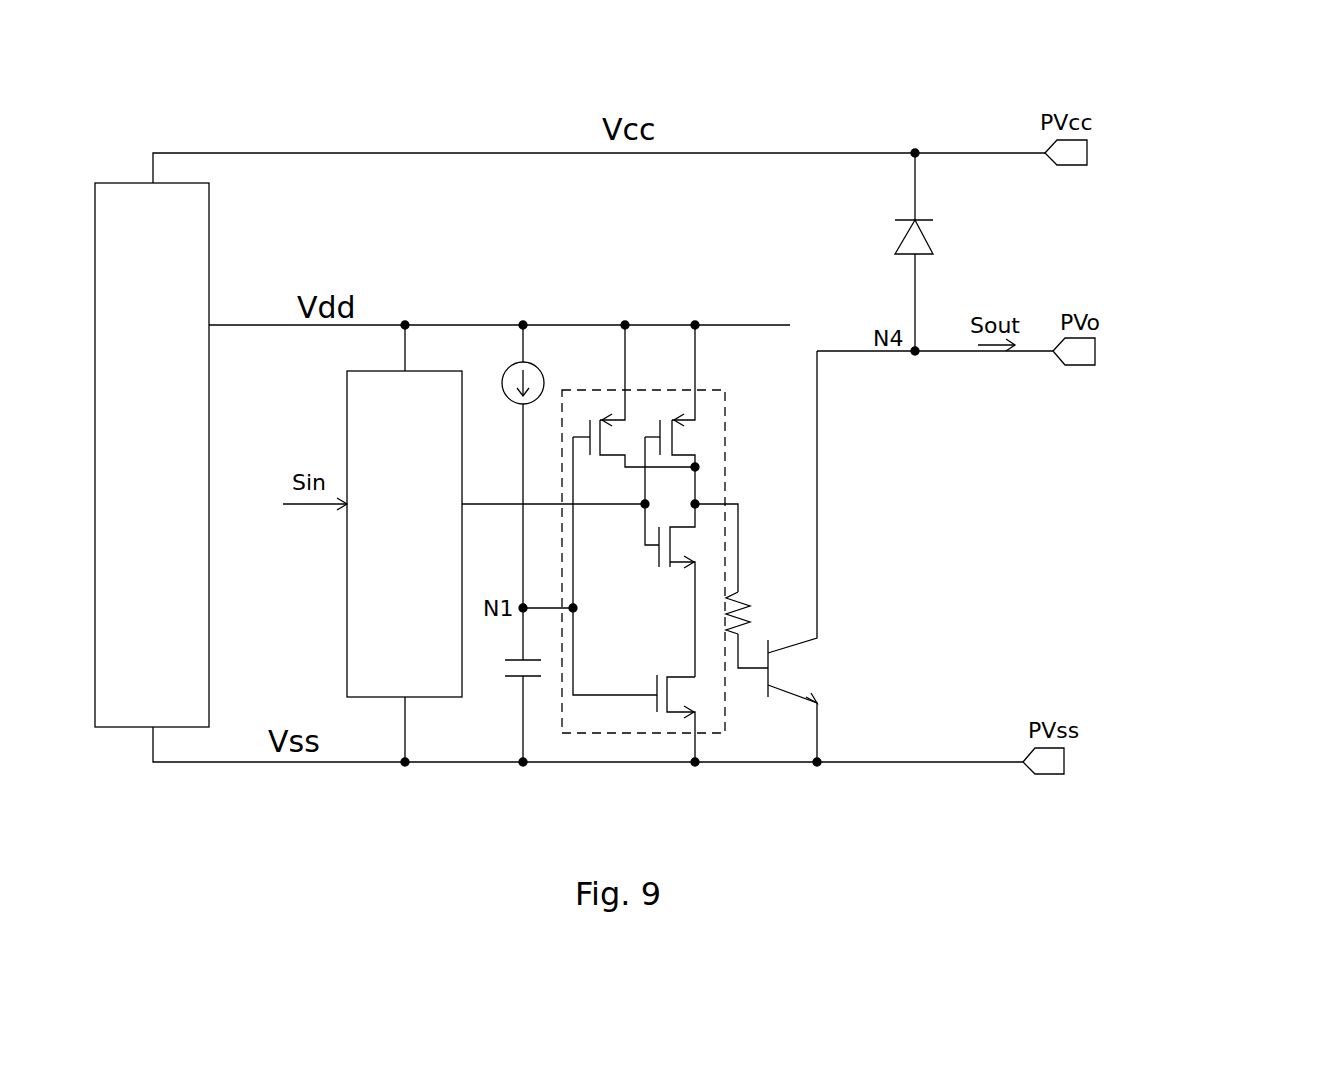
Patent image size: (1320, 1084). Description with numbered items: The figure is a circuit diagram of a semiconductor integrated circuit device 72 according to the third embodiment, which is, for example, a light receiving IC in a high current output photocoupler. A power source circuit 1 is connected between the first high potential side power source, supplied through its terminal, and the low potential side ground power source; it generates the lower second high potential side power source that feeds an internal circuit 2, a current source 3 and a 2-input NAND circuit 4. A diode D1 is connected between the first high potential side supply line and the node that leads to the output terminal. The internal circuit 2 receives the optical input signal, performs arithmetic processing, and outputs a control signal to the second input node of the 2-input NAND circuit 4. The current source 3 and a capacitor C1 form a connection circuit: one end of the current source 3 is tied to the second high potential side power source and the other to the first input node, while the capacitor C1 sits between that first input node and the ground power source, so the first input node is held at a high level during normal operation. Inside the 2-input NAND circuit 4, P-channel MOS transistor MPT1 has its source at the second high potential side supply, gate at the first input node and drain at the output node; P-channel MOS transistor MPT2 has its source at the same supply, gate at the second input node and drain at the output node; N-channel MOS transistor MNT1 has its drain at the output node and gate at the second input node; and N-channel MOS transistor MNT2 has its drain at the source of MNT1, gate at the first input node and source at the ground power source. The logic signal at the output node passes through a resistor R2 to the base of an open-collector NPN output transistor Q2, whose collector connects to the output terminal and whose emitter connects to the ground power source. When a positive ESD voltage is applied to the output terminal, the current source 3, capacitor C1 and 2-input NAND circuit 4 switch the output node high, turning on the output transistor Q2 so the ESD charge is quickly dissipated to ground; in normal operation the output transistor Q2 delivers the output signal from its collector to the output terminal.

The power source circuit 1 is at (209, 250).
The internal circuit 2 is at (345, 634).
The current source 3 is at (512, 394).
The 2-input NAND circuit 4 is at (715, 404).
The semiconductor integrated circuit device 72 is at (1182, 245).
The diode D1 is at (940, 238).
The capacitor C1 is at (505, 672).
The resistor R2 is at (748, 620).
The output transistor Q2 is at (802, 672).
The P-channel MOS transistor MPT1 is at (624, 432).
The P-channel MOS transistor MPT2 is at (682, 424).
The N-channel MOS transistor MNT1 is at (650, 556).
The N-channel MOS transistor MNT2 is at (650, 682).